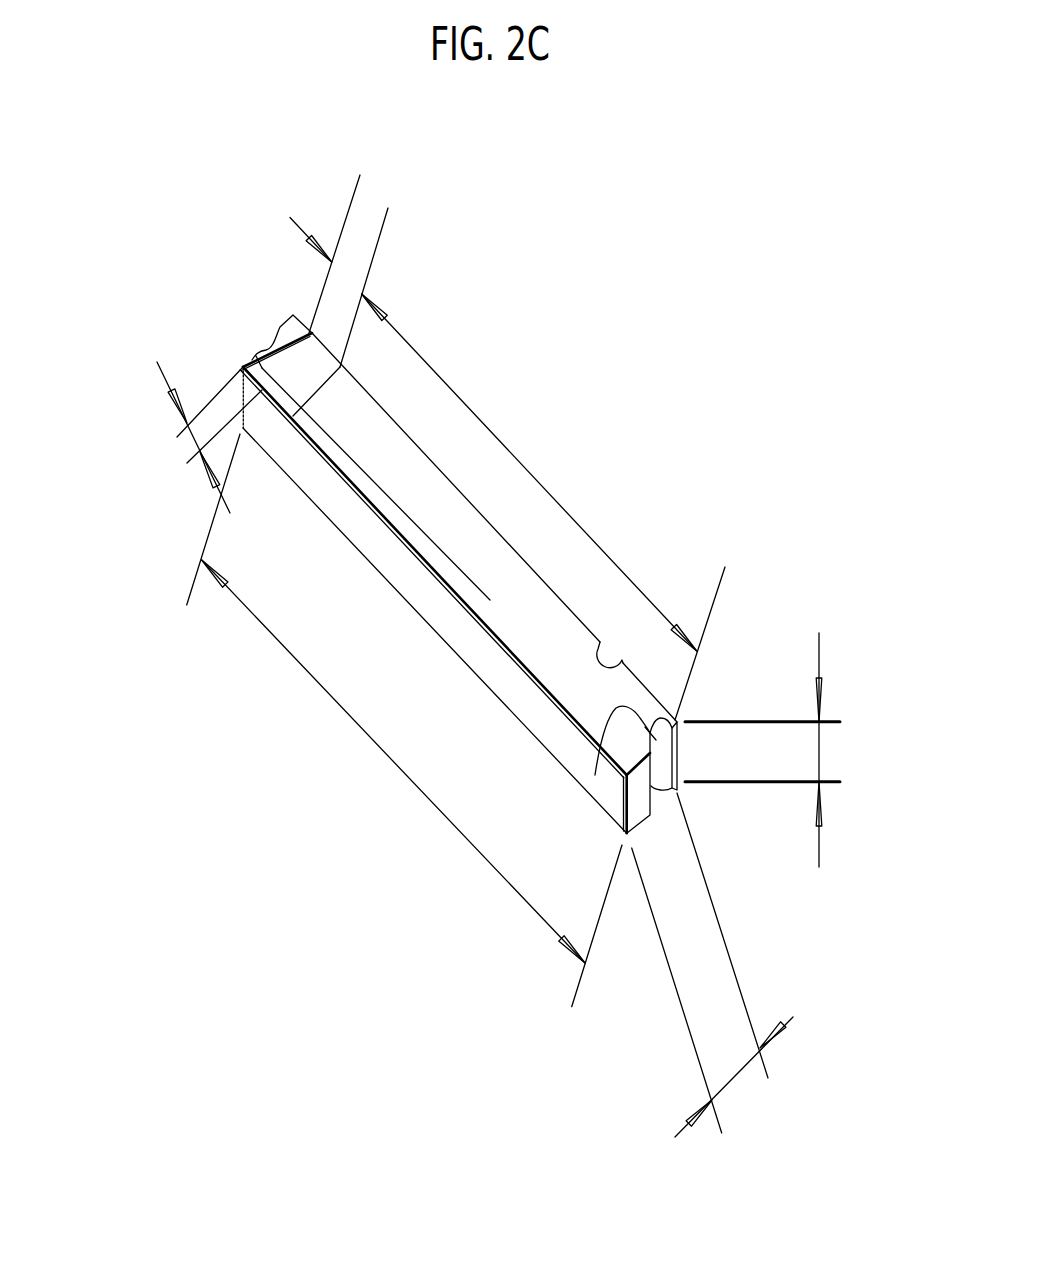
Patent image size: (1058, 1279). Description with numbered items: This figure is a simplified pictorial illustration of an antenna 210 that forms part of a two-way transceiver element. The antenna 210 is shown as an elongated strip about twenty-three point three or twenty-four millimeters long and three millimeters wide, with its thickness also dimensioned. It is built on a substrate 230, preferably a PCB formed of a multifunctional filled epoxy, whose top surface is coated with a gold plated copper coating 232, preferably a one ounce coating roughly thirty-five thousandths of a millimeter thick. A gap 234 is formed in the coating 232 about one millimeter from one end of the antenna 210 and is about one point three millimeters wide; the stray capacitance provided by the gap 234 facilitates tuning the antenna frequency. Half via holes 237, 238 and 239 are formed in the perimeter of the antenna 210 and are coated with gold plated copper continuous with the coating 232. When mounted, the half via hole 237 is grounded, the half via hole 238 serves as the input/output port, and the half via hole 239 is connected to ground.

The antenna 210 is at (671, 147).
The substrate 230 is at (556, 622).
The gold plated copper coating 232 is at (258, 352).
The gap 234 is at (284, 388).
The half via hole 237 is at (605, 738).
The half via hole 238 is at (610, 665).
The half via hole 239 is at (272, 352).